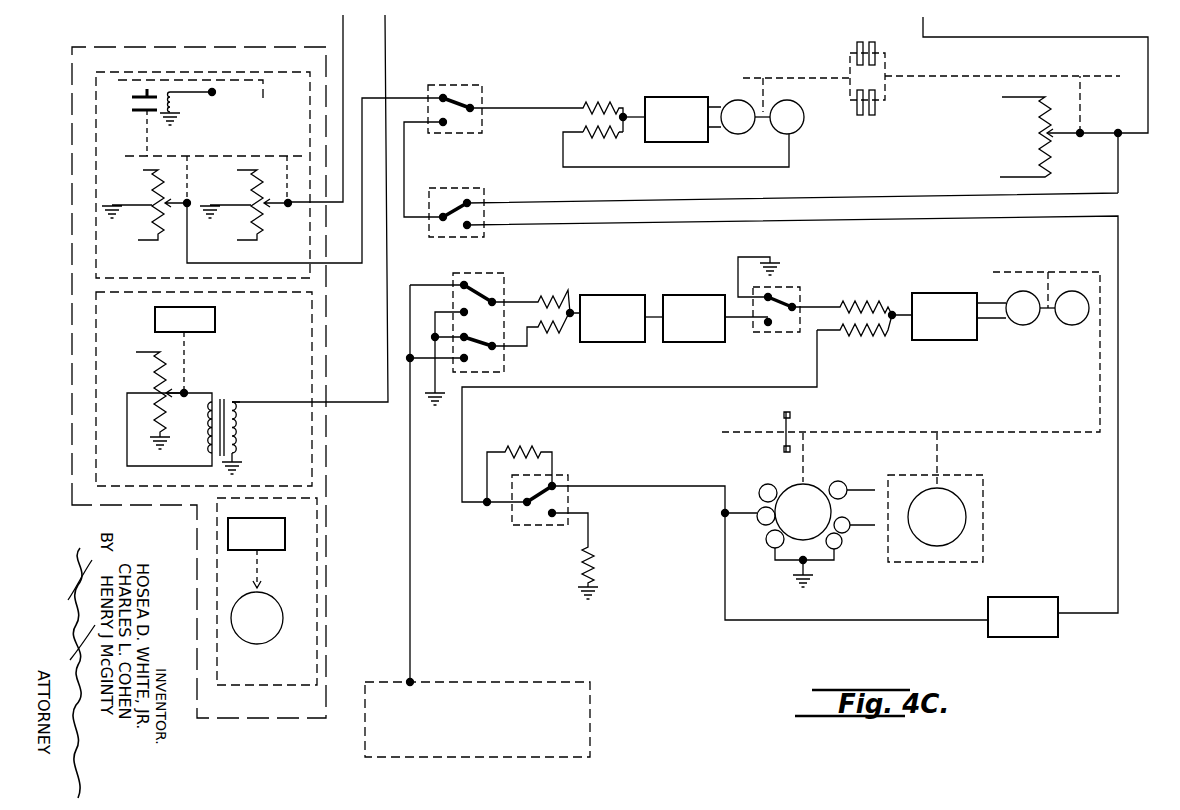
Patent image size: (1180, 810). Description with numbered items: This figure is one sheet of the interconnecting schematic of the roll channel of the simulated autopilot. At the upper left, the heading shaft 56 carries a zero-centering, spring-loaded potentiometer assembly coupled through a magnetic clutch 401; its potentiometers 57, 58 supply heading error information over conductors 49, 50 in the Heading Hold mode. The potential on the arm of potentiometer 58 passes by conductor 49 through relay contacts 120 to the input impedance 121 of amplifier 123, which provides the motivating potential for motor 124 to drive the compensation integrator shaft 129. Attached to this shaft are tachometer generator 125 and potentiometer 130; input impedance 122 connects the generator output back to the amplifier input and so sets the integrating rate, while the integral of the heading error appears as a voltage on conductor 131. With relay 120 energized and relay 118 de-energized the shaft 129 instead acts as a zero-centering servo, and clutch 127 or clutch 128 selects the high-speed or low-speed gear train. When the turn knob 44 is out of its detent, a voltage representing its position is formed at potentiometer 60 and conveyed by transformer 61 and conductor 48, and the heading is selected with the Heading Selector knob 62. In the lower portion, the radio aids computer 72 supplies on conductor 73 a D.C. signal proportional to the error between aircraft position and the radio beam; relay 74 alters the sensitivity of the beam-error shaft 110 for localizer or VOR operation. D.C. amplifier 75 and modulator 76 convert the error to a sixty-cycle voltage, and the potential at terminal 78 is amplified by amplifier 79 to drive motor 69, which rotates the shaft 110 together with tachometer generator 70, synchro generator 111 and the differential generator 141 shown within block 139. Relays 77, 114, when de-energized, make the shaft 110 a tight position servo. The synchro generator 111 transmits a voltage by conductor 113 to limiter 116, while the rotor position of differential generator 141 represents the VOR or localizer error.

The magnetic clutch 401 is at (174, 114).
The heading shaft 56 is at (263, 96).
The potentiometer 57 is at (262, 233).
The potentiometer 58 is at (158, 232).
The conductor 50 is at (344, 60).
The conductor 48 is at (388, 50).
The conductor 49 is at (398, 97).
The relay contacts 120 is at (480, 82).
The input impedance 121 is at (593, 105).
The input impedance 122 is at (596, 134).
The amplifier 123 is at (672, 128).
The motor 124 is at (737, 125).
The tachometer generator 125 is at (792, 122).
The compensation integrator shaft 129 is at (793, 78).
The clutch 127 is at (877, 50).
The clutch 128 is at (875, 116).
The conductor 131 is at (961, 38).
The potentiometer 130 is at (1046, 148).
The relay 118 is at (462, 185).
The relay 74 is at (507, 277).
The conductor 73 is at (414, 562).
The D.C. amplifier 75 is at (605, 325).
The modulator 76 is at (698, 325).
The relay 77 is at (800, 282).
The terminal 78 is at (893, 312).
The amplifier 79 is at (940, 302).
The motor 69 is at (1018, 292).
The tachometer generator 70 is at (1068, 292).
The VOR-LOC shaft 110 is at (1000, 433).
The turn knob 44 is at (196, 325).
The potentiometer 60 is at (160, 378).
The transformer 61 is at (226, 402).
The Heading Selector knob 62 is at (247, 545).
The relay 114 is at (565, 475).
The conductor 113 is at (862, 620).
The synchro generator 111 is at (791, 522).
The synchro differential generator 141 is at (923, 527).
The block 139 is at (985, 524).
The limiter 116 is at (1009, 627).
The radio aids computer 72 is at (468, 731).